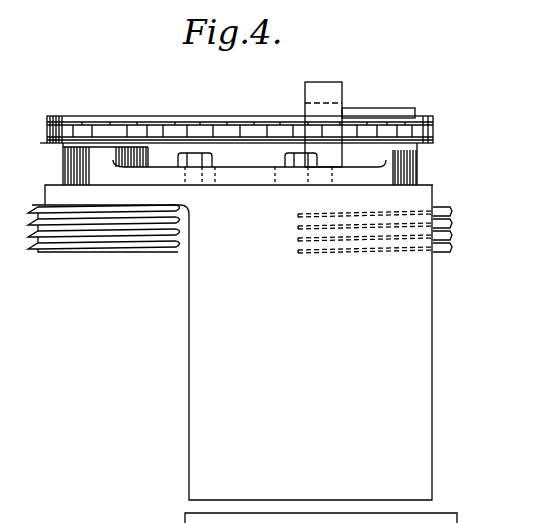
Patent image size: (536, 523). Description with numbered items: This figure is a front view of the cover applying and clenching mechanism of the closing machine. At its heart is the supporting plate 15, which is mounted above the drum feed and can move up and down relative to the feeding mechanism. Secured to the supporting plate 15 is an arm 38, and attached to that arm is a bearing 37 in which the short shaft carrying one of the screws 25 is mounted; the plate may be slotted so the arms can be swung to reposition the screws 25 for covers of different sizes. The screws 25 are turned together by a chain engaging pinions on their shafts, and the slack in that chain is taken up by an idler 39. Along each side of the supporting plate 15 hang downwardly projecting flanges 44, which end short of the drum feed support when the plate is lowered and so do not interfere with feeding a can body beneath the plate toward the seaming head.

The supporting plate 15 is at (243, 197).
The screws 25 is at (104, 245).
The bearing 37 is at (115, 155).
The arm 38 is at (158, 173).
The idler 39 is at (403, 113).
The flanges 44 is at (322, 358).